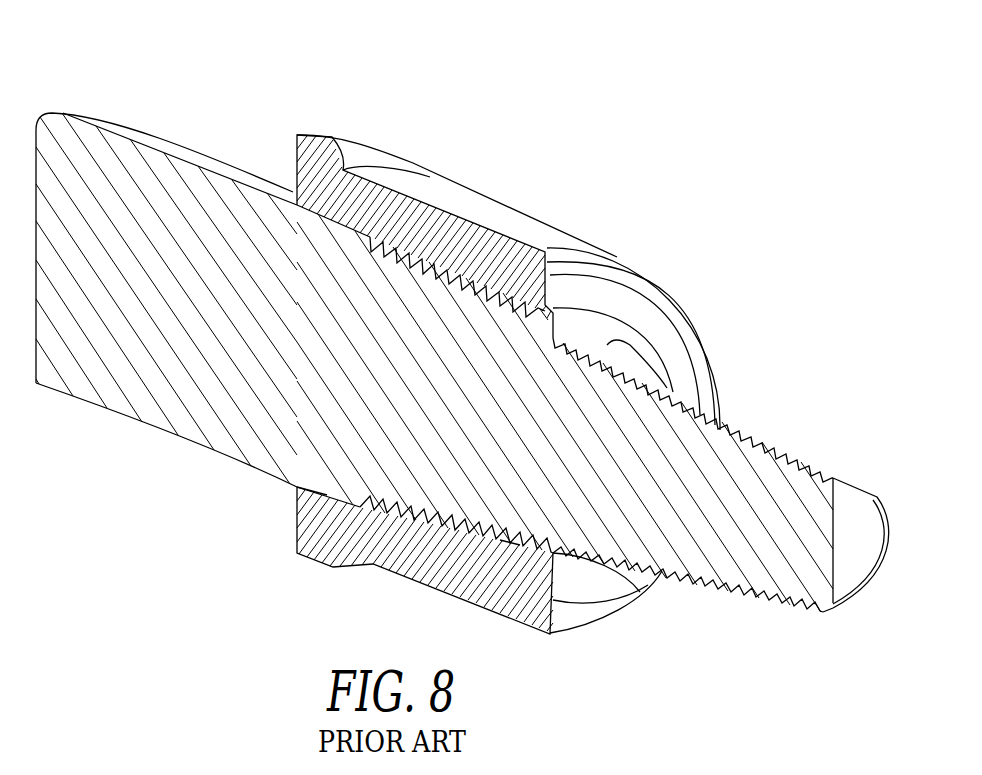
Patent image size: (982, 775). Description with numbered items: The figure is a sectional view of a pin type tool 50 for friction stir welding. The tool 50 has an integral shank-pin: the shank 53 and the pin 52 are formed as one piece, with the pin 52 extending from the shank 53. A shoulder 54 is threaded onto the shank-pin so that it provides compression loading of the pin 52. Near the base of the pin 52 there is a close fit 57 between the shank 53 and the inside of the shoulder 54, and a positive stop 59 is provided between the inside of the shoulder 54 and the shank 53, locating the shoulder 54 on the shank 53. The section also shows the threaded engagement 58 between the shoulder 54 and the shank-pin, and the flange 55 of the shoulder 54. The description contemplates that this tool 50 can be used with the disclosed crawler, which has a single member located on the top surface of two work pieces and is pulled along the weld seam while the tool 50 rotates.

The pin type tool 50 is at (462, 333).
The pin 52 is at (742, 422).
The shank 53 is at (157, 133).
The shoulder 54 is at (508, 386).
The nut flange 55 is at (590, 582).
The close fit 57 is at (327, 490).
The engaged threads 58 is at (433, 273).
The positive stop 59 is at (513, 530).